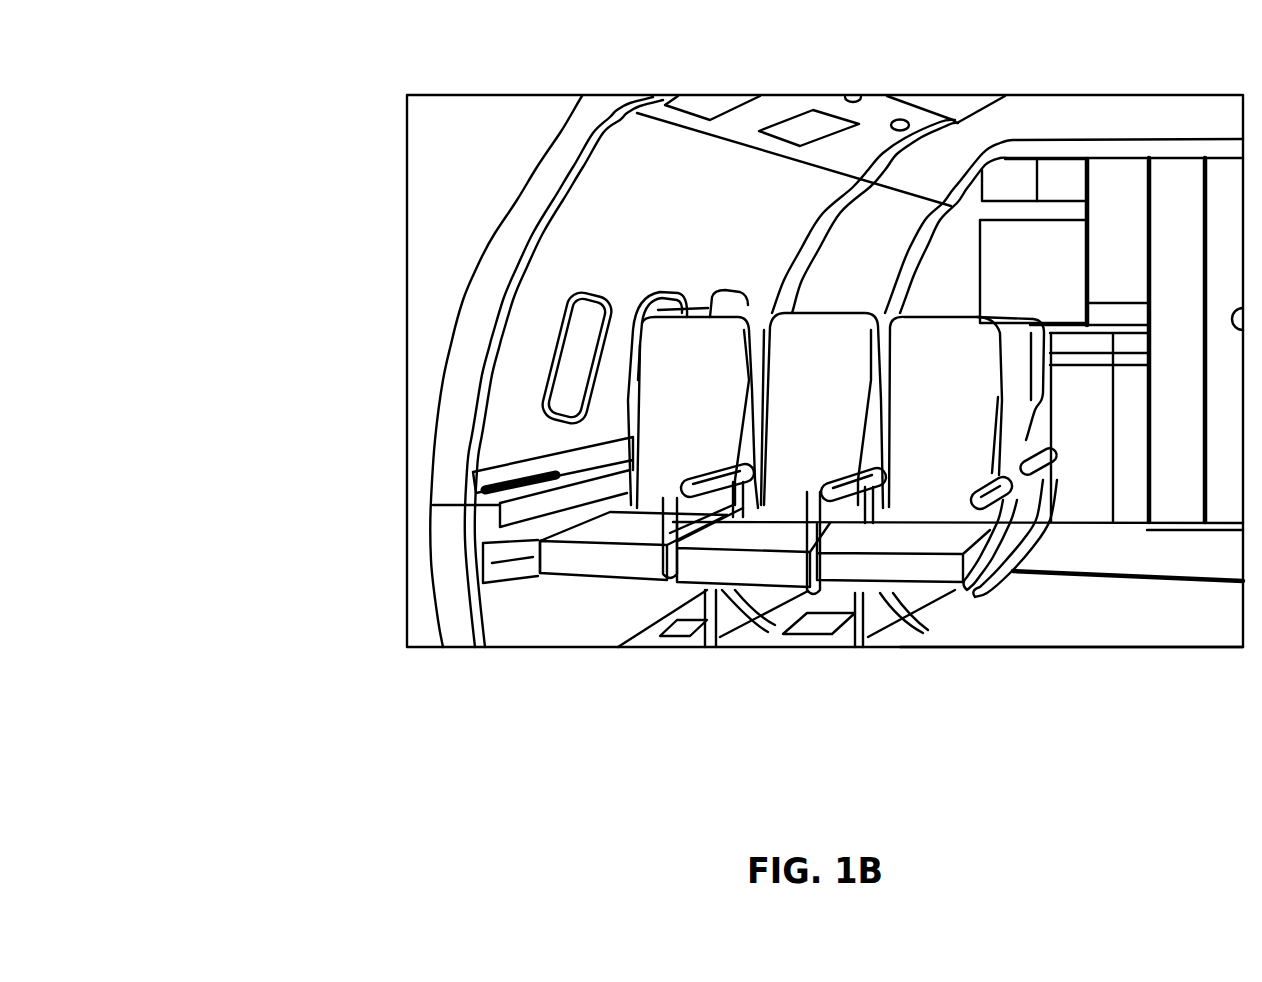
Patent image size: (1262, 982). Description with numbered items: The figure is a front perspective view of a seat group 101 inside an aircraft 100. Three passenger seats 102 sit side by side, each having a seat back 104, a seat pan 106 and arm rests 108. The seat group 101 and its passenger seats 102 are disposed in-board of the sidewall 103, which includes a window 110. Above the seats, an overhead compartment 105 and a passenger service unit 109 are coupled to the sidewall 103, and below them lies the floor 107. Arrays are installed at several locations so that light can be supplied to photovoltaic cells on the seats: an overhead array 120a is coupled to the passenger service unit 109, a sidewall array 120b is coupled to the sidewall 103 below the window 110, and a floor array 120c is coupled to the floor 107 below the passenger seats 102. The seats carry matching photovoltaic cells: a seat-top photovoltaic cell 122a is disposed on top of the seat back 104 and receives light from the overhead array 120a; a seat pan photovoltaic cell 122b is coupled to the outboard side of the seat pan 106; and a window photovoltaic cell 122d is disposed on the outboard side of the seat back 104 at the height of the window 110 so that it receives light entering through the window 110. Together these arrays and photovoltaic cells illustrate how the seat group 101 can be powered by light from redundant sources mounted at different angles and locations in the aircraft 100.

The aircraft 100 is at (209, 37).
The seat group 101 is at (1030, 403).
The passenger seat 102 is at (786, 438).
The sidewall 103 is at (567, 270).
The seat back 104 is at (980, 418).
The overhead compartment 105 is at (955, 100).
The seat pan 106 is at (673, 537).
The floor 107 is at (1020, 640).
The arm rest 108 is at (700, 487).
The passenger service unit 109 is at (890, 113).
The window 110 is at (540, 417).
The overhead array 120a is at (712, 100).
The sidewall array 120b is at (493, 567).
The floor array 120c is at (678, 630).
The seat-top photovoltaic cell 122a is at (701, 313).
The seat pan photovoltaic cell 122b is at (545, 575).
The window photovoltaic cell 122d is at (652, 360).